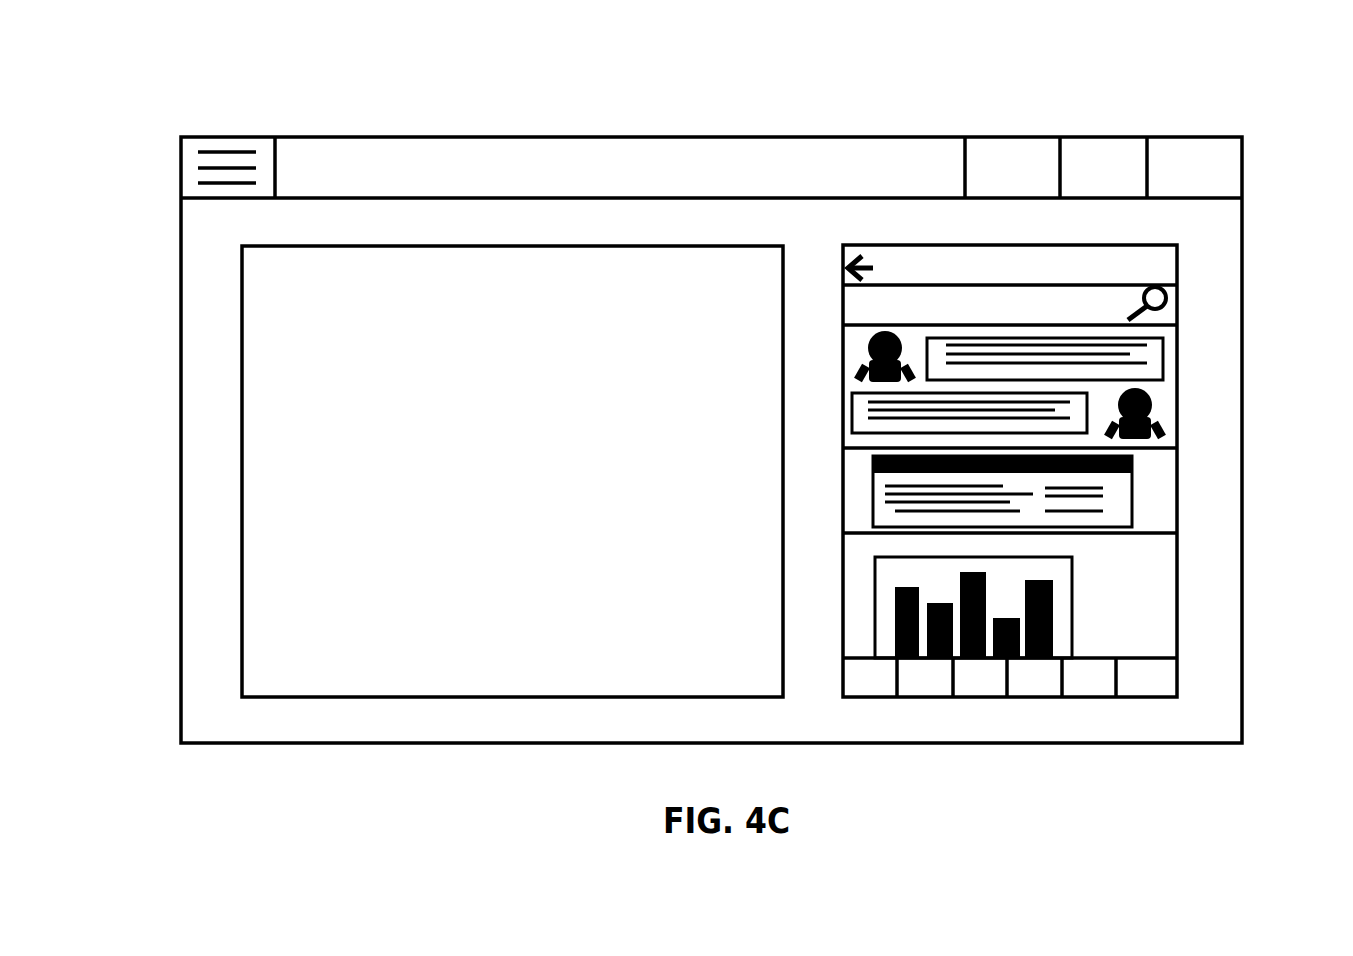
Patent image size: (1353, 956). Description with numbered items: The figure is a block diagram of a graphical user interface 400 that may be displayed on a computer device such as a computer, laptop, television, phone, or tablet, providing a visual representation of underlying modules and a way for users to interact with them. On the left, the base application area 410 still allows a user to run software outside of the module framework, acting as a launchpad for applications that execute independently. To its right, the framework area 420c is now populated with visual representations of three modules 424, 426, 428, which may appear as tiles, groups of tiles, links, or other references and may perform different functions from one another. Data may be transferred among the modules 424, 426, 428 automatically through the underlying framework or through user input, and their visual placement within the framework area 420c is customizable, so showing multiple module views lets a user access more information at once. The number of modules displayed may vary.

The graphical user interface 400 is at (995, 127).
The base application area 410 is at (297, 397).
The framework area 420c is at (1120, 332).
The module 424 is at (1127, 382).
The module 426 is at (1115, 511).
The module 428 is at (1115, 627).